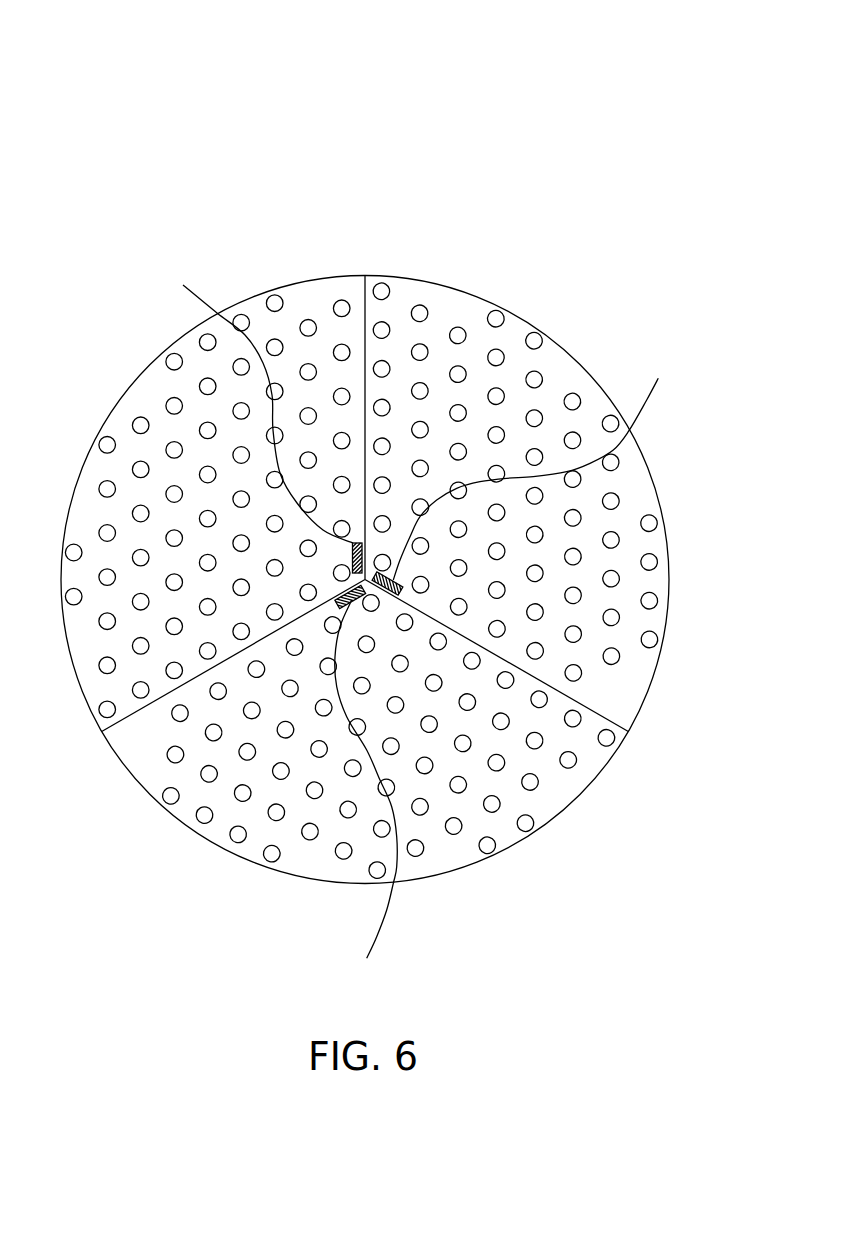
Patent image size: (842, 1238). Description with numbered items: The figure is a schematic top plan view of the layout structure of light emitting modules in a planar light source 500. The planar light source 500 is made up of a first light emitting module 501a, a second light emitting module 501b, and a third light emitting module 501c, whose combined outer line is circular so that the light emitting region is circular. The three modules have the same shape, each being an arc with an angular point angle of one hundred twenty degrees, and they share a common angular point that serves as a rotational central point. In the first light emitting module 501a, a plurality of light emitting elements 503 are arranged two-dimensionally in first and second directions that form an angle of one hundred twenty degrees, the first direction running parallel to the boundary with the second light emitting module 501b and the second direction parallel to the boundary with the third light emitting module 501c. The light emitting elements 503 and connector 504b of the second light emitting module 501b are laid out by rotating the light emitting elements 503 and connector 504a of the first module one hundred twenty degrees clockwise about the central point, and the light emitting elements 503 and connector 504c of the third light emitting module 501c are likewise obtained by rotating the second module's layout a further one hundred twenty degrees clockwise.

The planar light source 500 is at (372, 105).
The first light emitting module 501a is at (145, 403).
The second light emitting module 501b is at (467, 307).
The third light emitting module 501c is at (158, 777).
The light emitting element 503 is at (343, 307).
The connector 504a is at (260, 416).
The connector 504b is at (534, 474).
The connector 504c is at (367, 786).